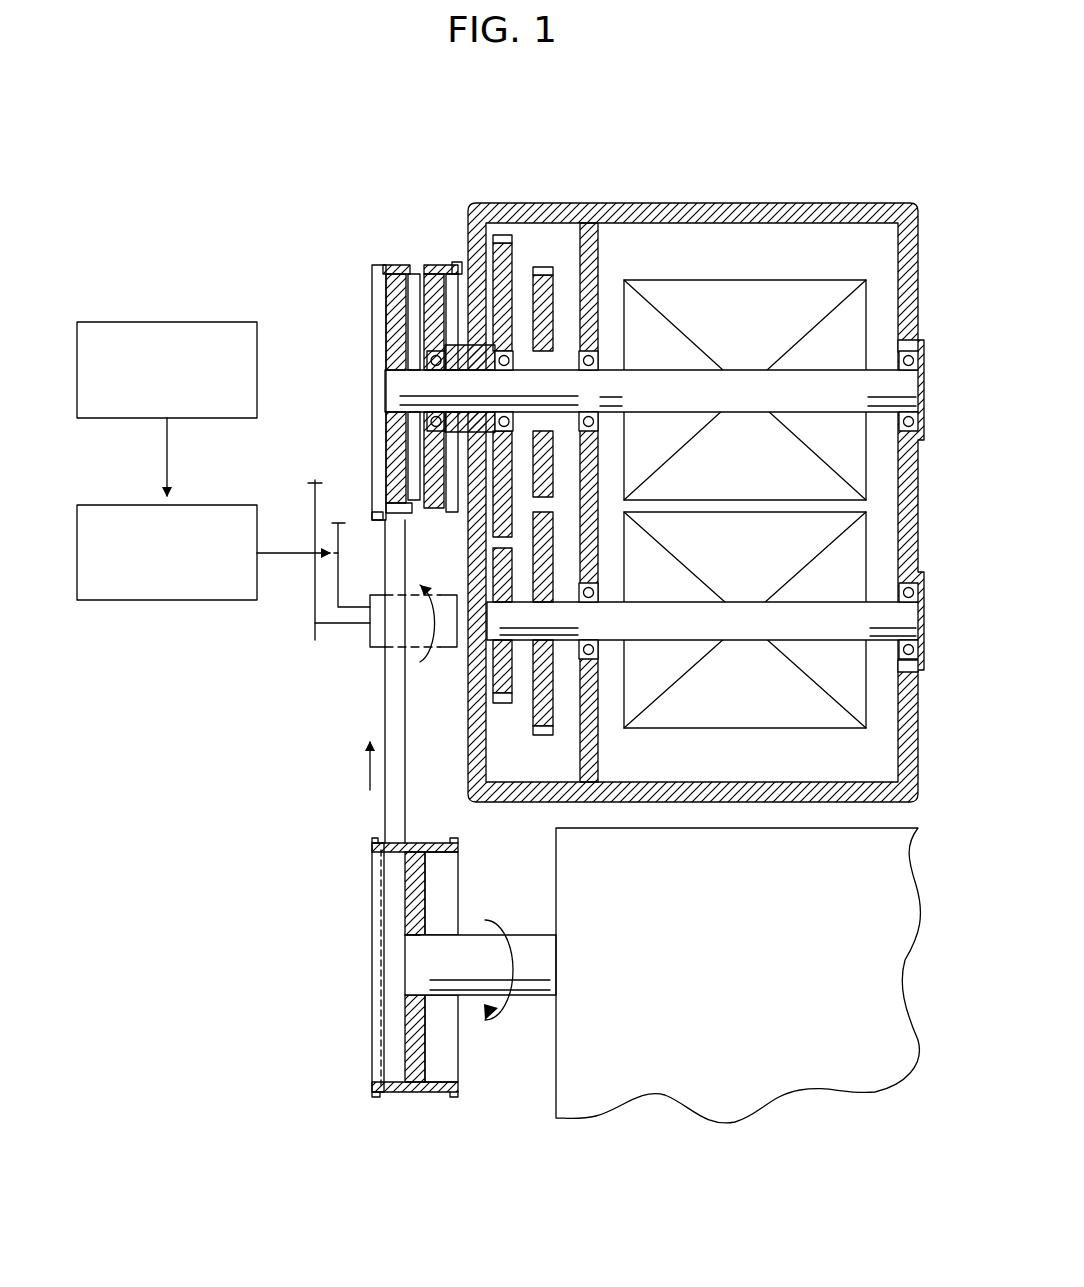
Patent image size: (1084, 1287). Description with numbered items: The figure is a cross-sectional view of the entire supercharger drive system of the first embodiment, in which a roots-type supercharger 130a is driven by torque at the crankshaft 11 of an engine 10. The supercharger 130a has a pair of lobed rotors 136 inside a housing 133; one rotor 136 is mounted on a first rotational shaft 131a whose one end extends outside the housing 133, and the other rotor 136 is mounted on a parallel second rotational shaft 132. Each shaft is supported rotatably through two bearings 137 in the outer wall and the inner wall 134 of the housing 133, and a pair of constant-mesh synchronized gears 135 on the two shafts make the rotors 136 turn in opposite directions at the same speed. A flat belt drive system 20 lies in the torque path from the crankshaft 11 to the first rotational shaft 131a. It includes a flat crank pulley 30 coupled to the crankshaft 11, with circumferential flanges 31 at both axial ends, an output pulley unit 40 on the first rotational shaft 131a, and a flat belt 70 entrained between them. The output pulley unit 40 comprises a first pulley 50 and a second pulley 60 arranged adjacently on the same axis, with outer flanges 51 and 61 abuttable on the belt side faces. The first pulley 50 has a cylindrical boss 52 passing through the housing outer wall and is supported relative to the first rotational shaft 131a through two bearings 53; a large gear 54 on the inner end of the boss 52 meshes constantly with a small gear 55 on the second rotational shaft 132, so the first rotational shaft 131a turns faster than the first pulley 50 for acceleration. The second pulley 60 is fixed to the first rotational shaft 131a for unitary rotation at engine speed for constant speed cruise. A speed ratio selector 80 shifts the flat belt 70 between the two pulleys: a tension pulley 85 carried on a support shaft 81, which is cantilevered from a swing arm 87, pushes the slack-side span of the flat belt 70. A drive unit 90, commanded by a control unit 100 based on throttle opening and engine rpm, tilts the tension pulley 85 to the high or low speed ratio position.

The engine 10 is at (762, 992).
The crankshaft 11 is at (543, 1000).
The flat belt drive system 20 is at (484, 1140).
The crank pulley 30 is at (368, 1013).
The flange 31 is at (376, 1097).
The output pulley unit 40 is at (402, 178).
The first pulley 50 is at (428, 265).
The flange 51 is at (455, 262).
The cylindrical boss 52 is at (468, 515).
The bearing 53 is at (448, 357).
The large gear 54 is at (503, 235).
The small gear 55 is at (505, 704).
The second pulley 60 is at (360, 288).
The flange 61 is at (370, 520).
The flat belt 70 is at (385, 810).
The speed ratio selector 80 is at (366, 635).
The support shaft 81 is at (330, 618).
The tension pulley 85 is at (372, 650).
The swing arm 87 is at (310, 500).
The drive unit 90 is at (218, 505).
The control unit 100 is at (220, 322).
The supercharger 130a is at (836, 200).
The first rotational shaft 131a is at (886, 365).
The second rotational shaft 132 is at (884, 650).
The housing 133 is at (690, 203).
The inner wall 134 is at (606, 245).
The synchronized gear 135 is at (543, 267).
The rotor 136 is at (748, 280).
The bearing 137 is at (600, 420).